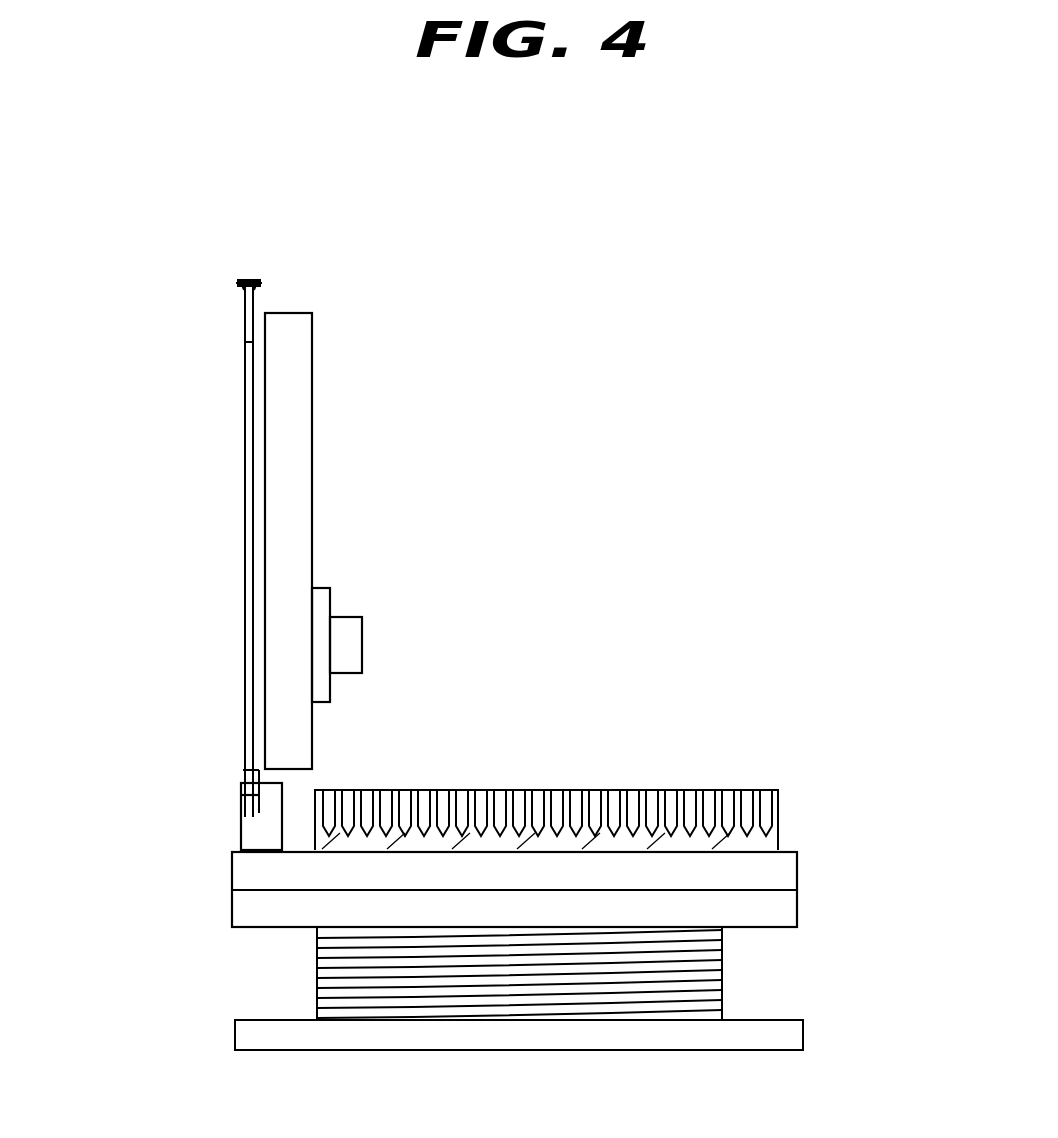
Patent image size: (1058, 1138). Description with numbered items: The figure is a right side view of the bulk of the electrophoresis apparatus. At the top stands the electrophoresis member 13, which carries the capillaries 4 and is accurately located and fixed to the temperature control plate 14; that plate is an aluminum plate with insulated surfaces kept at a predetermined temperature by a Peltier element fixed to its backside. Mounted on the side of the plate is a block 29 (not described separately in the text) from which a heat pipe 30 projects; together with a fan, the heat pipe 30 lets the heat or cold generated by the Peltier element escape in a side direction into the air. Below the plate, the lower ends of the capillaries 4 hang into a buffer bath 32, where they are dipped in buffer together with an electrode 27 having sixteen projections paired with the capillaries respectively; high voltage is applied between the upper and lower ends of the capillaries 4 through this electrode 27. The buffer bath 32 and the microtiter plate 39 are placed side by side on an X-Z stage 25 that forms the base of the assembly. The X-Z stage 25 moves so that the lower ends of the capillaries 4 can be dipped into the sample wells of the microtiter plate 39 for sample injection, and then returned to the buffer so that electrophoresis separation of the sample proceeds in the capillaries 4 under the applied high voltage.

The capillaries 4 is at (238, 780).
The electrophoresis member 13 is at (245, 497).
The temperature control plate 14 is at (312, 425).
The X-Z stage 25 is at (797, 906).
The electrode 27 is at (248, 775).
The mounting block 29 is at (330, 590).
The heat pipe 30 is at (352, 650).
The buffer bath 32 is at (238, 835).
The microtiter plate 39 is at (779, 822).